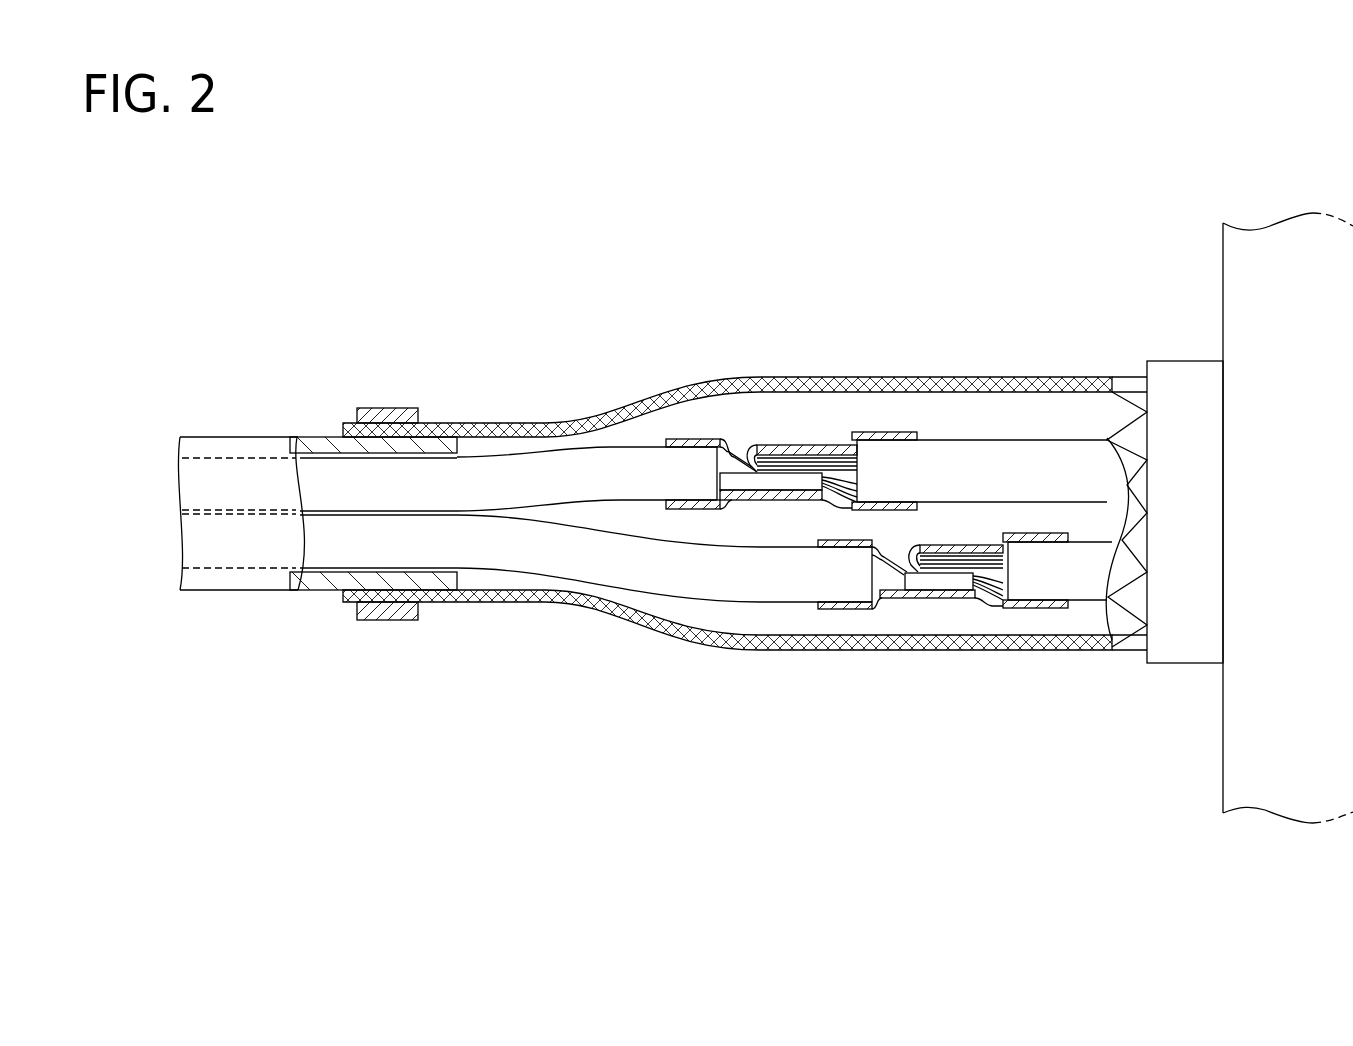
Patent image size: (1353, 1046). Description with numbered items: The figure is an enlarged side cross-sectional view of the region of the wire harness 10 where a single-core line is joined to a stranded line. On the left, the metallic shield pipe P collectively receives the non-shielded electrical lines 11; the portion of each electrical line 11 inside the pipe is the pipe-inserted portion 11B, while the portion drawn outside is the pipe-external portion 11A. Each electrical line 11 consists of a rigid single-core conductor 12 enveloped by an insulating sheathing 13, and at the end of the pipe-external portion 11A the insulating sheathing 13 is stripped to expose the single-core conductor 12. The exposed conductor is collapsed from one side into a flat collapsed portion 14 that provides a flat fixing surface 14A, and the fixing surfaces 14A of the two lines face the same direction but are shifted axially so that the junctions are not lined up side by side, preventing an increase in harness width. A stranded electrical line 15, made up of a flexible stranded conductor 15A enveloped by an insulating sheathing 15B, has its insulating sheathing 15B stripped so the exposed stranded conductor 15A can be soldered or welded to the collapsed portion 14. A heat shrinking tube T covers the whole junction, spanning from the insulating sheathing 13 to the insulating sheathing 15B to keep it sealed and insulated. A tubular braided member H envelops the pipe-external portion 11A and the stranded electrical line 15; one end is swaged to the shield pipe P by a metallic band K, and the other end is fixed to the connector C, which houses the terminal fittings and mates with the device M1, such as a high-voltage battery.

The shield pipe P is at (234, 468).
The wire harness 10 is at (322, 474).
The metallic band K is at (389, 409).
The electrical line 11 is at (540, 538).
The pipe-external portion 11A is at (562, 560).
The pipe-inserted portion 11B is at (242, 550).
The single-core conductor 12 is at (740, 476).
The insulating sheathing 13 is at (695, 466).
The heat shrinking tube T is at (807, 448).
The braided member H is at (918, 378).
The stranded electrical line 15 is at (1022, 462).
The stranded conductor 15A is at (983, 564).
The insulating sheathing 15B is at (1057, 576).
The collapsed portion 14 is at (937, 586).
The fixing surface 14A is at (953, 574).
The connector C is at (1191, 381).
The device M1 is at (1277, 267).